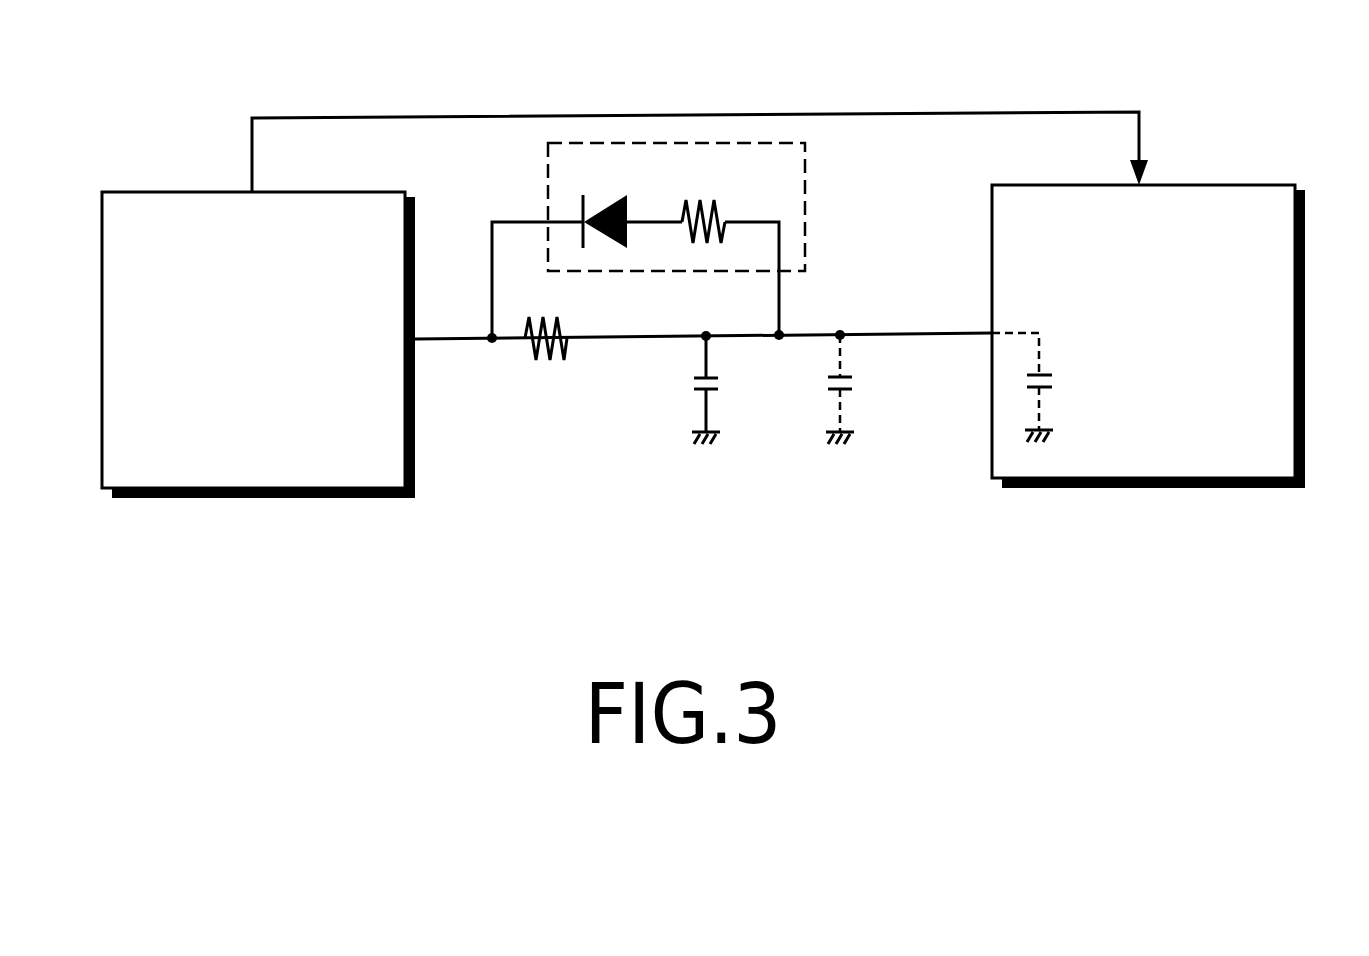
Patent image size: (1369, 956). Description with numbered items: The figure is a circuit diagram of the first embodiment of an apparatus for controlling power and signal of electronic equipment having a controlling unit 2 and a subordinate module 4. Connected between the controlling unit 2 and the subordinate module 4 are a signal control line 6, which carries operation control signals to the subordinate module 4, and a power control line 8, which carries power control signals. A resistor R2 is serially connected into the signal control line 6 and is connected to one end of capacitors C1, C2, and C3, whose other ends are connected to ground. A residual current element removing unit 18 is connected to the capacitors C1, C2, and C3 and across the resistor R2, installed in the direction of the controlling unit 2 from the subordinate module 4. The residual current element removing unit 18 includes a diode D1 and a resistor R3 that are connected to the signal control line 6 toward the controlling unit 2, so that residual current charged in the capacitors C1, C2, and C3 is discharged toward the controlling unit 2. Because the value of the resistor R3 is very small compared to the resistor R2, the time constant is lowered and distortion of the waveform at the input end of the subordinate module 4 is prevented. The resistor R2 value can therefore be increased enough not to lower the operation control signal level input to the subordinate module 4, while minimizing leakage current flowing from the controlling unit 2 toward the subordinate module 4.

The controlling unit 2 is at (100, 340).
The subordinate module 4 is at (1305, 328).
The signal control line 6 is at (433, 338).
The power control line 8 is at (362, 118).
The residual current element removing unit 18 is at (689, 241).
The diode D1 is at (602, 200).
The resistor R2 is at (531, 360).
The resistor R3 is at (705, 198).
The capacitor C1 is at (732, 387).
The capacitor C2 is at (867, 387).
The capacitor C3 is at (1050, 387).